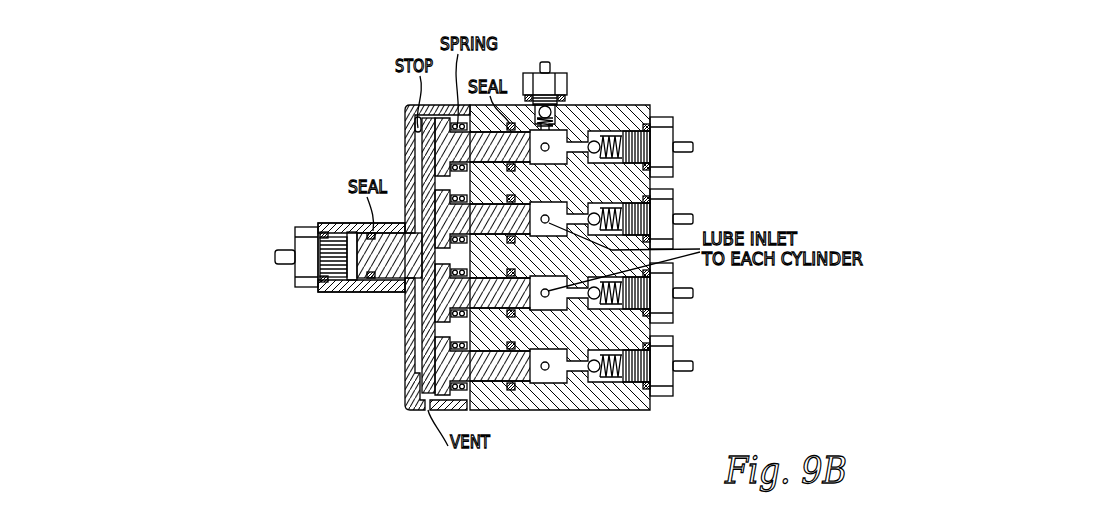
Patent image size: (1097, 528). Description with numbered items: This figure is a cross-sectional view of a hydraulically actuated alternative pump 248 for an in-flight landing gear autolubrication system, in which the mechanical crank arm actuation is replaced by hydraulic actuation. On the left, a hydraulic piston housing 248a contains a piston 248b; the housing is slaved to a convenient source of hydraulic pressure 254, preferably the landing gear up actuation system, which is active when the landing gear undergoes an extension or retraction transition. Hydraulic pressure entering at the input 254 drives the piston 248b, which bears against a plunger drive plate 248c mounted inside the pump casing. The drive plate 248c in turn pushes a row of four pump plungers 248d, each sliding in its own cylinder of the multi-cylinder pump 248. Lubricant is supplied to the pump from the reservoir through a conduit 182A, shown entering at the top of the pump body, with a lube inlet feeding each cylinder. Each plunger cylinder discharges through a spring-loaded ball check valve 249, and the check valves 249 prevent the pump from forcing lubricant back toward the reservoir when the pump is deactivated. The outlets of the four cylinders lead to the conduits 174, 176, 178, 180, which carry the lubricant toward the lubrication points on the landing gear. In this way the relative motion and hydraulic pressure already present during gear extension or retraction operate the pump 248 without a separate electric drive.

The hydraulically actuated multi-cylinder pump 248 is at (343, 96).
The conduit 182A is at (546, 48).
The check valves 249 is at (589, 195).
The conduit 174 is at (700, 147).
The conduit 176 is at (700, 219).
The conduit 178 is at (700, 293).
The conduit 180 is at (700, 366).
The source of hydraulic pressure 254 is at (262, 257).
The hydraulic piston housing 248a is at (346, 293).
The piston 248b is at (385, 281).
The plunger drive plate 248c is at (428, 366).
The pump plungers 248d is at (481, 345).